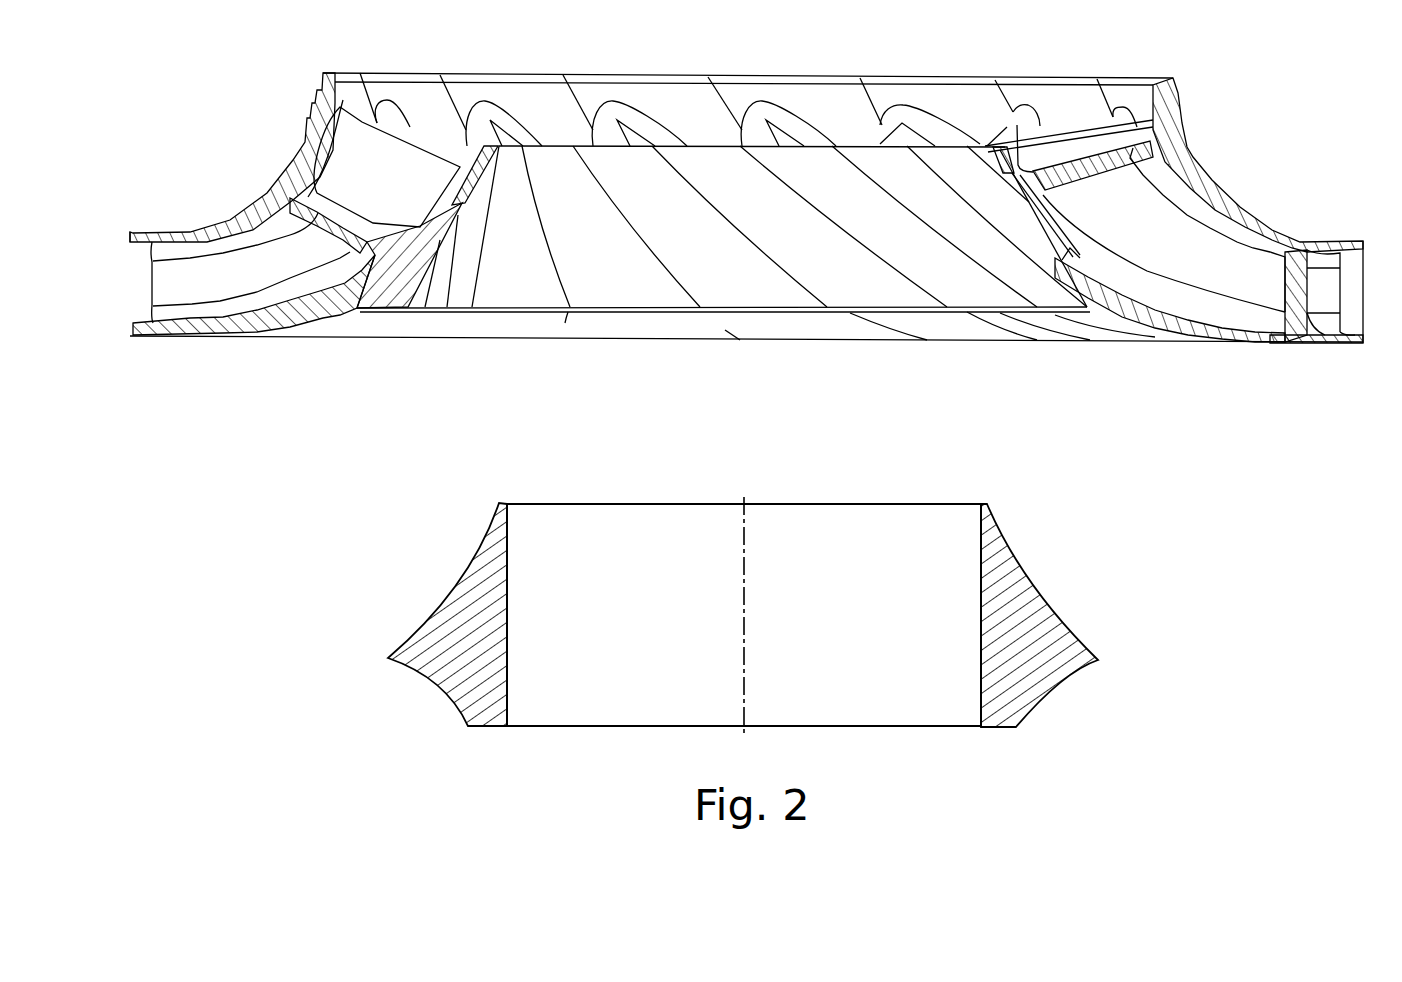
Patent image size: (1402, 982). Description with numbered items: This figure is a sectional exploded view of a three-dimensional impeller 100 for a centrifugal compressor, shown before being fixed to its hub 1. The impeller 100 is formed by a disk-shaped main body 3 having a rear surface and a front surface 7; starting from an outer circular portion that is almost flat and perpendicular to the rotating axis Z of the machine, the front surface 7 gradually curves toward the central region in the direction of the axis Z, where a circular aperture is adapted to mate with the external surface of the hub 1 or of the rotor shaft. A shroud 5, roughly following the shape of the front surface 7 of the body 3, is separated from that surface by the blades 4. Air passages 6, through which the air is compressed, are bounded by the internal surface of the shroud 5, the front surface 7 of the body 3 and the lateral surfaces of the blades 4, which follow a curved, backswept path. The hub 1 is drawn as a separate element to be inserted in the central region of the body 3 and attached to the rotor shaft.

The impeller 100 is at (745, 217).
The hub 1 is at (446, 585).
The main body 3 is at (389, 254).
The blades 4 is at (903, 138).
The shroud 5 is at (1271, 214).
The air passages 6 is at (240, 271).
The front surface 7 is at (1123, 268).
The rotating axis Z is at (747, 545).